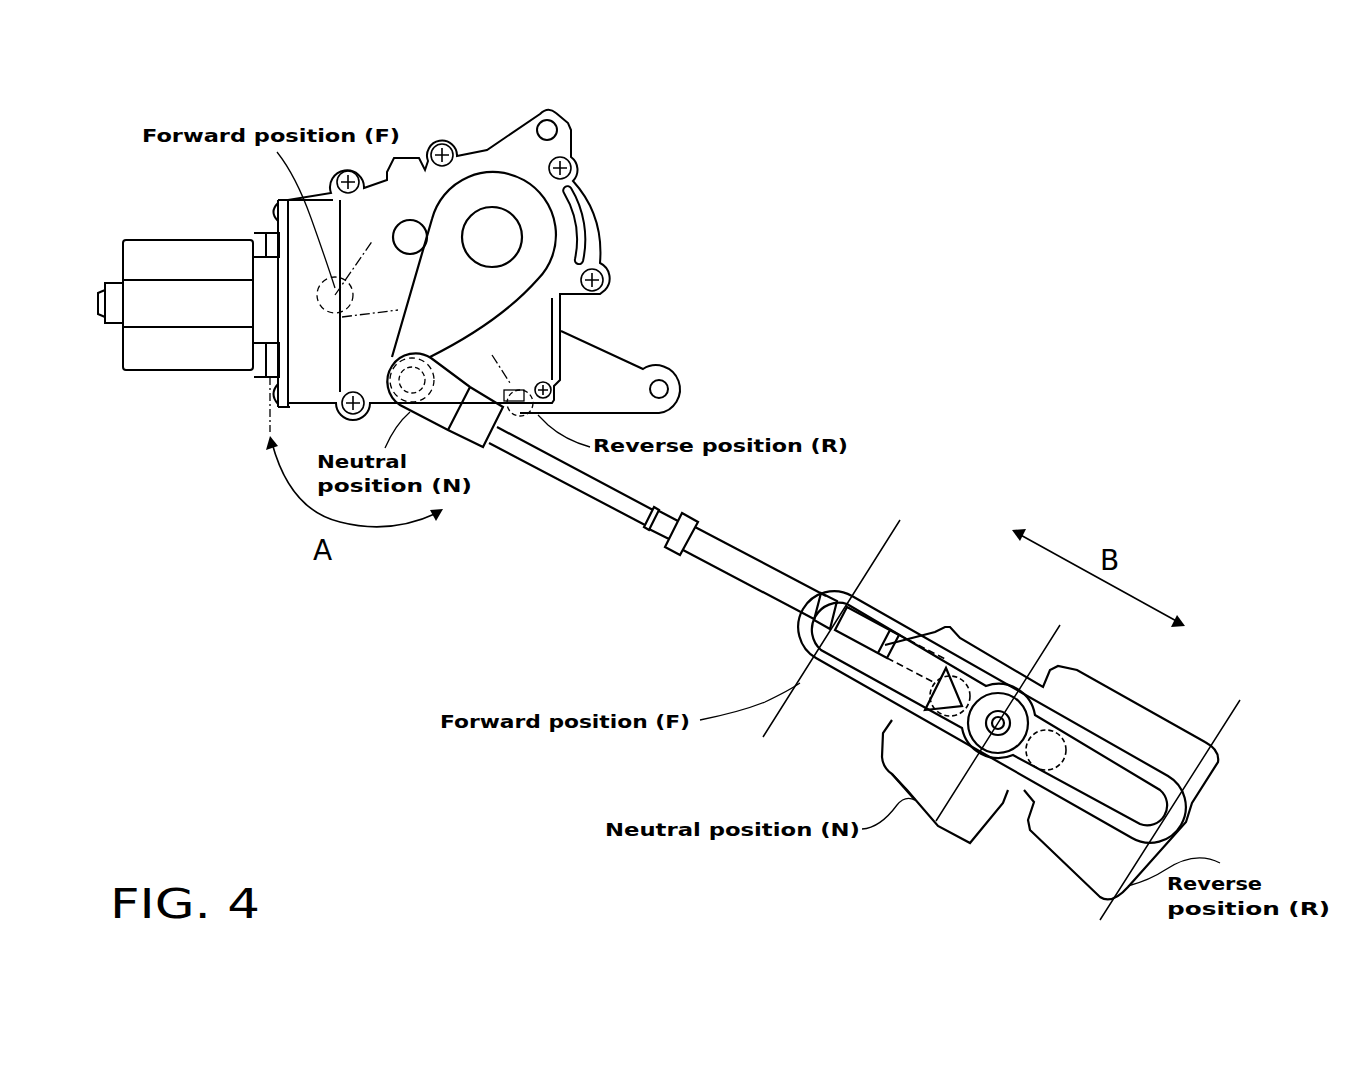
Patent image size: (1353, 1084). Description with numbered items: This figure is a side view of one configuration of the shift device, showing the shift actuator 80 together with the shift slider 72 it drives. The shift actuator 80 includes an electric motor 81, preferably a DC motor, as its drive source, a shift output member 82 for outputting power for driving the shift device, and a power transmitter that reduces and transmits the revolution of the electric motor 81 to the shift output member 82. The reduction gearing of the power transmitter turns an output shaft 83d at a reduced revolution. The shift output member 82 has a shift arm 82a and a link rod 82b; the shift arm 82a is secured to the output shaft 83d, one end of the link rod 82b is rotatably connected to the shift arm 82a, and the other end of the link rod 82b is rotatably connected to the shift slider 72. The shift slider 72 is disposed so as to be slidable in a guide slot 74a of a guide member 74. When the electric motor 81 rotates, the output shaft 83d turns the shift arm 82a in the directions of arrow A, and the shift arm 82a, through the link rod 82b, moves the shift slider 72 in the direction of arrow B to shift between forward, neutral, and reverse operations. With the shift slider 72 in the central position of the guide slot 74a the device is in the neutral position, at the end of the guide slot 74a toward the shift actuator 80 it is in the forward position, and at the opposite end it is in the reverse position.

The shift actuator 80 is at (259, 430).
The electric motor 81 is at (191, 234).
The shift output member 82 is at (498, 455).
The shift arm 82a is at (528, 255).
The link rod 82b is at (645, 503).
The output shaft 83d is at (510, 240).
The shift slider 72 is at (1048, 742).
The guide member 74 is at (834, 682).
The guide slot 74a is at (1068, 802).